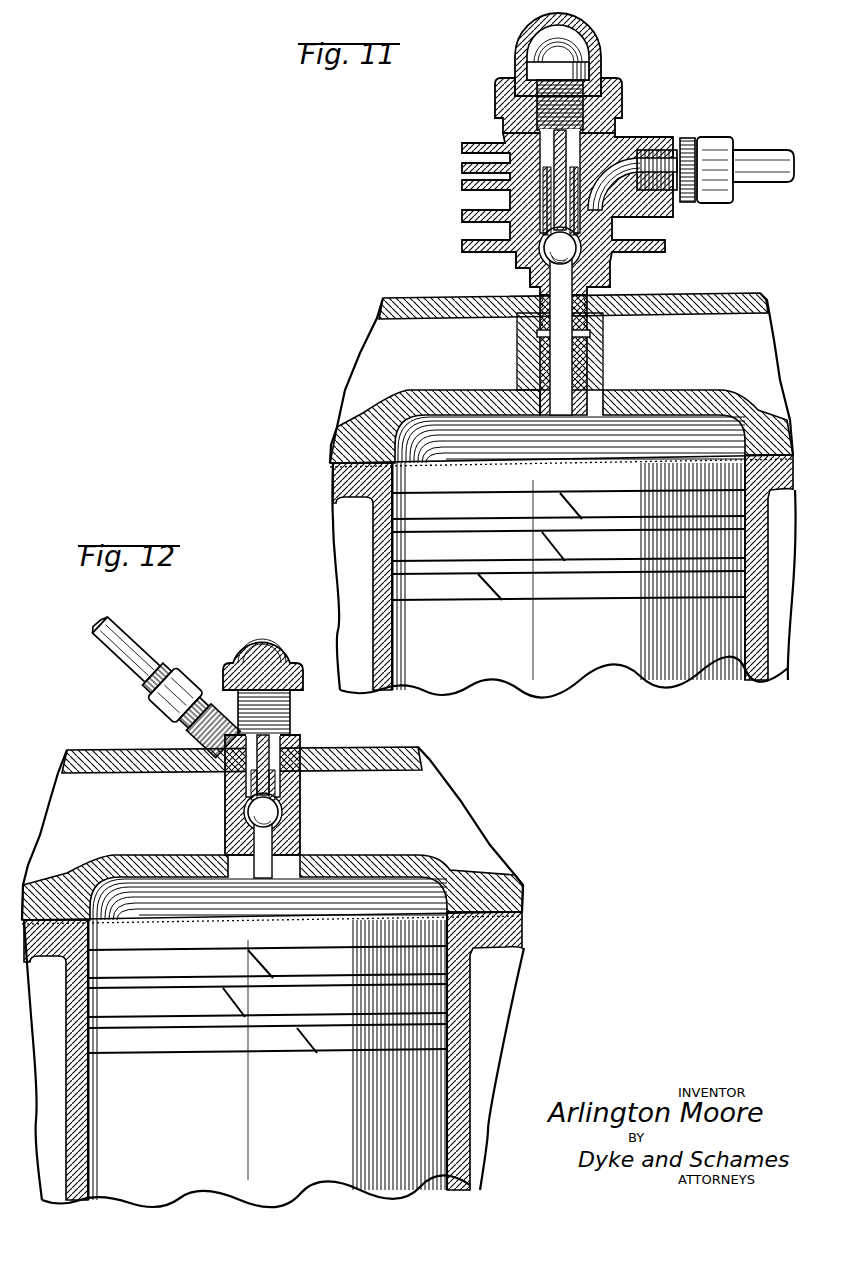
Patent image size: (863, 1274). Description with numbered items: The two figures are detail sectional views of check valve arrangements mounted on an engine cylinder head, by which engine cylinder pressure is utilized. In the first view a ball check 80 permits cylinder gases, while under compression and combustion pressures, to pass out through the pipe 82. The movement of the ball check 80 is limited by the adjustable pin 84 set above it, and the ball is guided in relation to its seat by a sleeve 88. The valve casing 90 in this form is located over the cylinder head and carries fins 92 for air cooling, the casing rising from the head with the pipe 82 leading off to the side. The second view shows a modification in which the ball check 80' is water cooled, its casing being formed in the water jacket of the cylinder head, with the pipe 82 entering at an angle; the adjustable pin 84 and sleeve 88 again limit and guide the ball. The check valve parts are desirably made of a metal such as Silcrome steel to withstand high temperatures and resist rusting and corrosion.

In FIG. 11, the ball check 80 is at (569, 214).
In FIG. 12, the ball check 80' is at (270, 758).
In FIG. 11, the pipe 82 is at (777, 143).
In FIG. 12, the pipe 82 is at (118, 634).
In FIG. 11, the adjustable pin 84 is at (560, 152).
In FIG. 12, the adjustable pin 84 is at (277, 733).
In FIG. 11, the sleeve 88 is at (547, 200).
In FIG. 12, the sleeve 88 is at (280, 785).
In FIG. 11, the valve casing 90 is at (517, 268).
In FIG. 11, the fins 92 is at (480, 146).